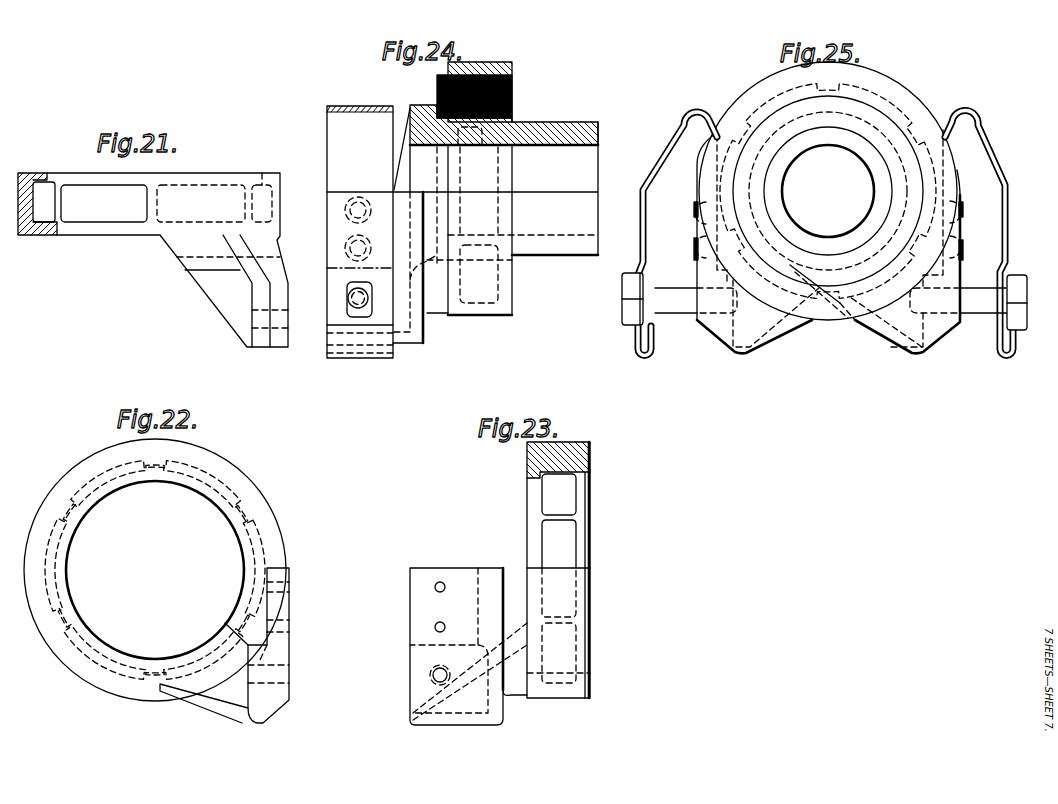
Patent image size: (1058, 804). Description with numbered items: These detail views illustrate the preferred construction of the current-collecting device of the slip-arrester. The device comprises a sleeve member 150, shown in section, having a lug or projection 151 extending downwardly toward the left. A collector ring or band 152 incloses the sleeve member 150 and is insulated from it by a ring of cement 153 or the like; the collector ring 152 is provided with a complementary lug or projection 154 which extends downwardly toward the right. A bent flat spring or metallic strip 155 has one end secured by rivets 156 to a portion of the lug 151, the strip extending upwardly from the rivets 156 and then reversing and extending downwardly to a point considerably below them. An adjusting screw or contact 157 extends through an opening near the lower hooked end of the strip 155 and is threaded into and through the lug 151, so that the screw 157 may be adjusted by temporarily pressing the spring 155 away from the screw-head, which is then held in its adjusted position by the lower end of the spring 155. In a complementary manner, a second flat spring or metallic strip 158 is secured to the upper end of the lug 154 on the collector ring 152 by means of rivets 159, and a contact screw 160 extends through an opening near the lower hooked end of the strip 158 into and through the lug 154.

In FIG. 24, the sleeve member 150 is at (583, 118).
In FIG. 24, the lug or projection 151 is at (418, 344).
In FIG. 25, the lug or projection 151 is at (718, 341).
In FIG. 21, the collector ring or band 152 is at (35, 236).
In FIG. 22, the collector ring or band 152 is at (258, 507).
In FIG. 23, the collector ring or band 152 is at (590, 456).
In FIG. 24, the collector ring or band 152 is at (492, 65).
In FIG. 25, the collector ring or band 152 is at (903, 96).
In FIG. 24, the ring of cement 153 is at (512, 96).
In FIG. 21, the complementary lug or projection 154 is at (263, 345).
In FIG. 22, the complementary lug or projection 154 is at (280, 652).
In FIG. 23, the complementary lug or projection 154 is at (415, 578).
In FIG. 25, the complementary lug or projection 154 is at (940, 338).
In FIG. 25, the bent flat spring or metallic strip 155 is at (661, 147).
In FIG. 25, the rivets 156 is at (697, 240).
In FIG. 25, the adjusting screw or contact 157 is at (622, 302).
In FIG. 25, the second flat spring or metallic strip 158 is at (1002, 172).
In FIG. 25, the rivets 159 is at (962, 217).
In FIG. 25, the contact screw 160 is at (1018, 285).